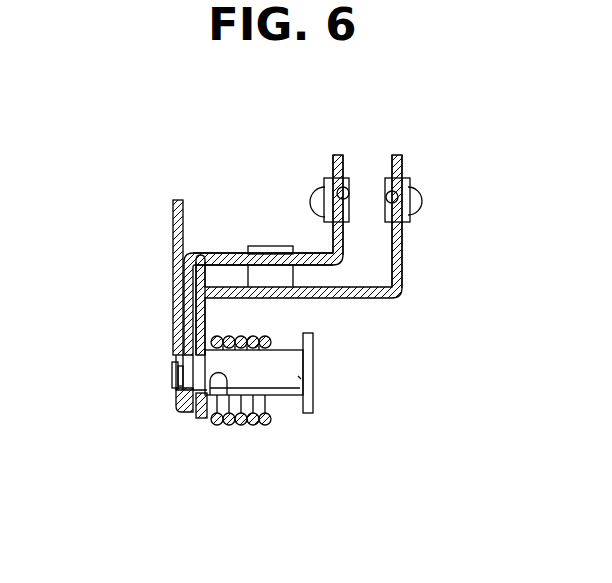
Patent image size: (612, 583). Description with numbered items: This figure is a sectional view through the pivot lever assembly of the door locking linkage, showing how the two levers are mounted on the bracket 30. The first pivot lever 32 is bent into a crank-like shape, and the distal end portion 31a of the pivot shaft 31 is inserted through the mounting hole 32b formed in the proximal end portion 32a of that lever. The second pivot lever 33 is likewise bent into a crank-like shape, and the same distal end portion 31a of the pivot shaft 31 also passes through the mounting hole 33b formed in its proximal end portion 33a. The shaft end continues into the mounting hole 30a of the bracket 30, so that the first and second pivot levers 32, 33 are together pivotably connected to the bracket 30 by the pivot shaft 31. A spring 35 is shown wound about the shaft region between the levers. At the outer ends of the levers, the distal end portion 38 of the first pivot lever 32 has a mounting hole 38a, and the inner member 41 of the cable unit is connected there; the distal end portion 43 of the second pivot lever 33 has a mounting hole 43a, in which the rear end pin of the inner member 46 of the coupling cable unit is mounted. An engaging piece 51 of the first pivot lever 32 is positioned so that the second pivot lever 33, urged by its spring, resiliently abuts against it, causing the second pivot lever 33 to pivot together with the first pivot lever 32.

The bracket 30 is at (134, 324).
The mounting hole 30a is at (172, 375).
The pivot shaft 31 is at (187, 422).
The distal end portion 31a is at (172, 377).
The first pivot lever 32 is at (279, 282).
The proximal end portion 32a is at (173, 292).
The mounting hole 32b is at (219, 420).
The second pivot lever 33 is at (335, 265).
The proximal end portion 33a is at (172, 240).
The mounting hole 33b is at (178, 413).
The coil spring 35 is at (237, 424).
The distal end portion 38 is at (403, 240).
The mounting hole 38a is at (418, 190).
The inner member 41 is at (425, 200).
The distal end portion 43 is at (364, 245).
The mounting hole 43a is at (357, 195).
The inner member 46 is at (310, 198).
The engaging piece 51 is at (267, 250).